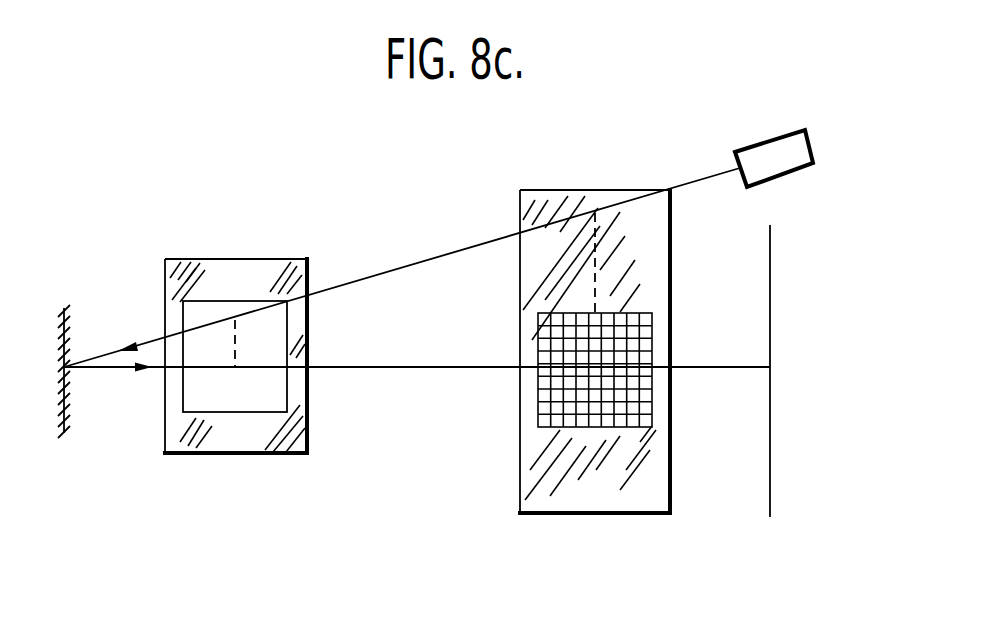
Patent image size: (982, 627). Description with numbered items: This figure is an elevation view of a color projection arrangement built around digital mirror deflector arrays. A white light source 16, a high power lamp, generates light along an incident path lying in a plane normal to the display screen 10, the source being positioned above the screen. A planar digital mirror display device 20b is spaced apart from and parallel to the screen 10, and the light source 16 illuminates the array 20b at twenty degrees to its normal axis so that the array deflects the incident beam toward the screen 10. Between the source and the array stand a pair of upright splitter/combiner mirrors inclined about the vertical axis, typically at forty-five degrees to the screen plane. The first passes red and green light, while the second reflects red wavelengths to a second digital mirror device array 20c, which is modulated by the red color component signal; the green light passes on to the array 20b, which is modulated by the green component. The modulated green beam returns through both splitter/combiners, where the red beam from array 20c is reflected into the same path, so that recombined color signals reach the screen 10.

The display screen 10 is at (772, 495).
The white light source 16 is at (795, 145).
The planar digital mirror display device 20b is at (540, 388).
The second digital mirror device array 20c is at (213, 385).